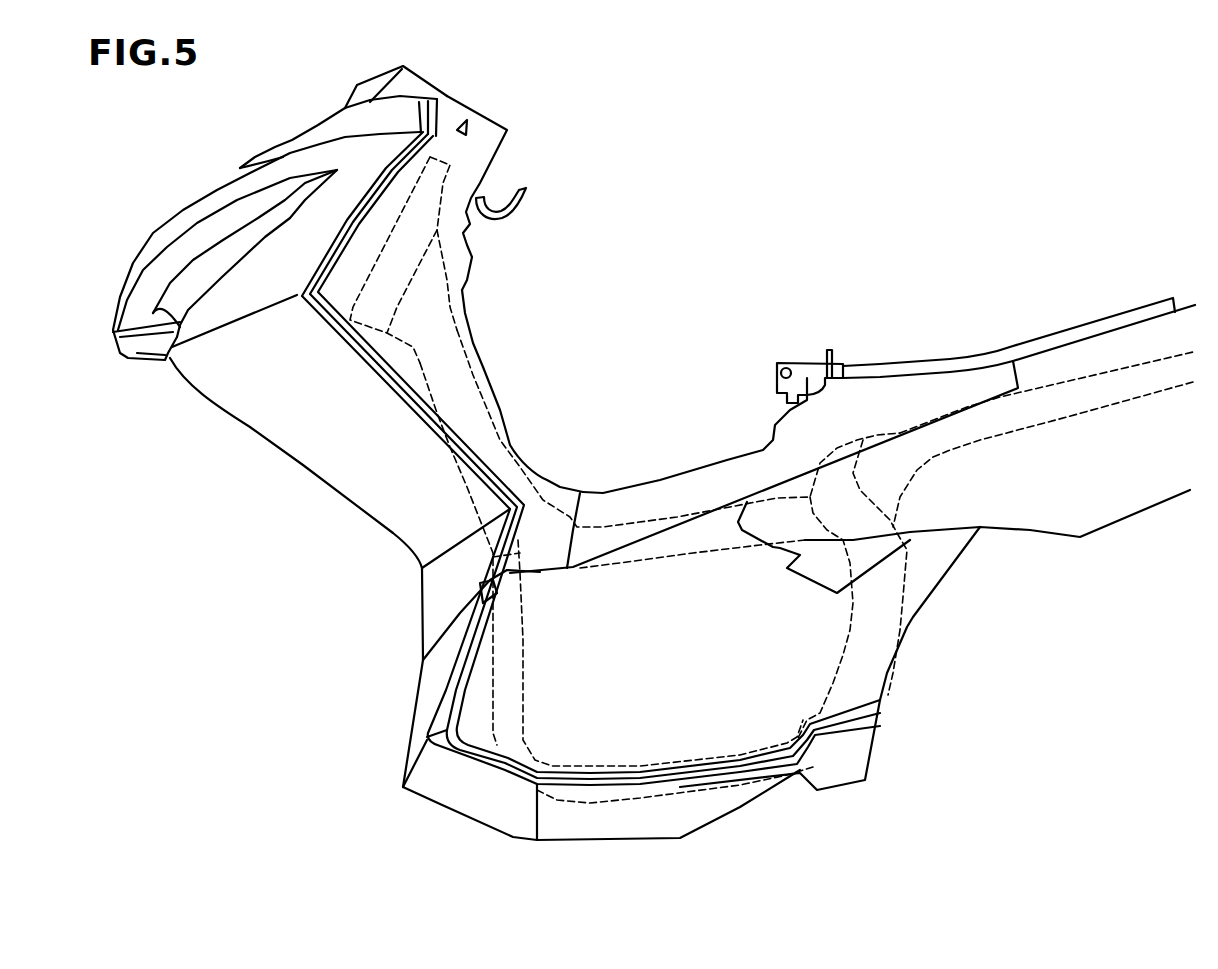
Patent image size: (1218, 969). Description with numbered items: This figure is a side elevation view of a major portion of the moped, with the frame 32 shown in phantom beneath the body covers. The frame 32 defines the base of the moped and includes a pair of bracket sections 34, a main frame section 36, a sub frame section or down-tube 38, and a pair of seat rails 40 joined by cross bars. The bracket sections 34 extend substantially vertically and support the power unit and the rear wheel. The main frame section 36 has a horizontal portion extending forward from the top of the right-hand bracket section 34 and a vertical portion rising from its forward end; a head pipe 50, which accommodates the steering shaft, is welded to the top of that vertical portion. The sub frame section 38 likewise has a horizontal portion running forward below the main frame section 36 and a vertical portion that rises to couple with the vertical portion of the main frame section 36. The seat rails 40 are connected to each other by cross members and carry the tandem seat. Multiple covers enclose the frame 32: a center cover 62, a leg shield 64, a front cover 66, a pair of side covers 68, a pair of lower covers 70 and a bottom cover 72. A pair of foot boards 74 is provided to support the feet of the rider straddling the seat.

The frame 32 is at (897, 403).
The bracket sections 34 is at (872, 678).
The main frame section 36 is at (470, 383).
The sub frame section 38 is at (512, 733).
The seat rails 40 is at (1062, 397).
The head pipe 50 is at (440, 187).
The center cover 62 is at (680, 493).
The leg shield 64 is at (517, 453).
The front cover 66 is at (322, 443).
The side covers 68 is at (1075, 512).
The lower covers 70 is at (945, 588).
The bottom cover 72 is at (637, 823).
The foot boards 74 is at (643, 767).